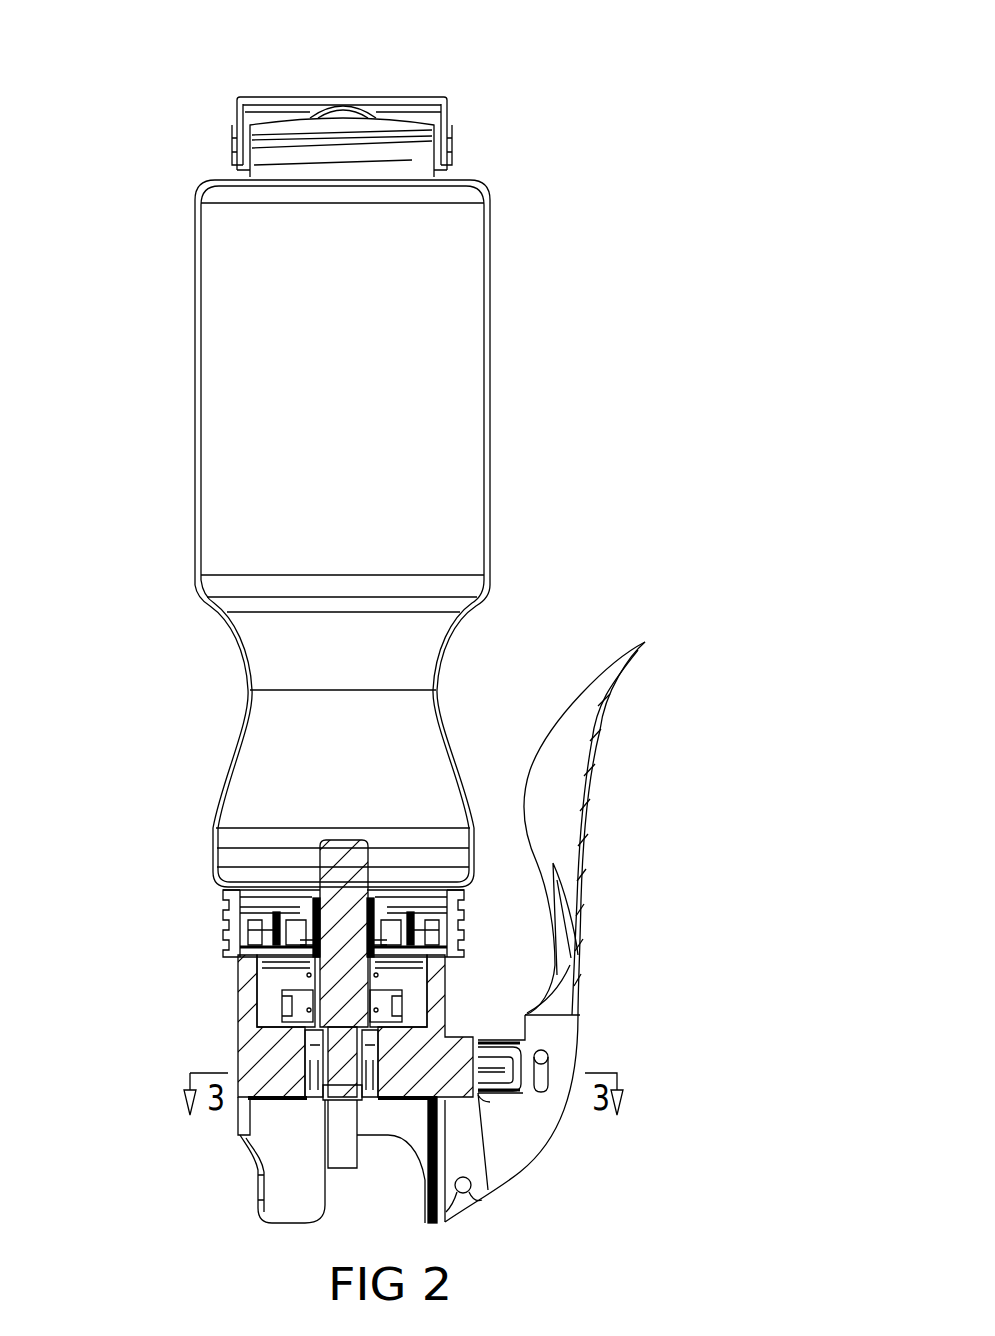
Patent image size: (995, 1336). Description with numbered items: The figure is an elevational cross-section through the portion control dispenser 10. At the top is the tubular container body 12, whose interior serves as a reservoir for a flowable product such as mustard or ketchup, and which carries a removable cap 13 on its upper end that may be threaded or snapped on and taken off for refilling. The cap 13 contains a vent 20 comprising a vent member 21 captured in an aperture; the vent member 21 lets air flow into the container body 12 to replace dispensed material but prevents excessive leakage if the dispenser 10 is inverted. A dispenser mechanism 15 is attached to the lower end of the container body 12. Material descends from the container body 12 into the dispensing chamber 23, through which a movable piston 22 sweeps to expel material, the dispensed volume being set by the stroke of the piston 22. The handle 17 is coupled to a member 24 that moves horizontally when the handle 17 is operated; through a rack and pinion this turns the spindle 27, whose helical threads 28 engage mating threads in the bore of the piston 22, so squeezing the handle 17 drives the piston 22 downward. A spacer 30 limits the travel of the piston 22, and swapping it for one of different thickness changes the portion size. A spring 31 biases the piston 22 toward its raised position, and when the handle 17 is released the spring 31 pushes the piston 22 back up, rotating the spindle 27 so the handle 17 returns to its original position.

The portion control dispenser 10 is at (540, 462).
The container body 12 is at (492, 352).
The cap 13 is at (452, 128).
The dispenser mechanism 15 is at (153, 865).
The handle 17 is at (590, 830).
The vent 20 is at (312, 55).
The vent member 21 is at (350, 80).
The piston 22 is at (262, 997).
The dispensing chamber 23 is at (400, 968).
The member 24 is at (487, 1097).
The spindle 27 is at (350, 853).
The helical threads 28 is at (313, 870).
The spacer 30 is at (288, 1000).
The spring 31 is at (308, 972).